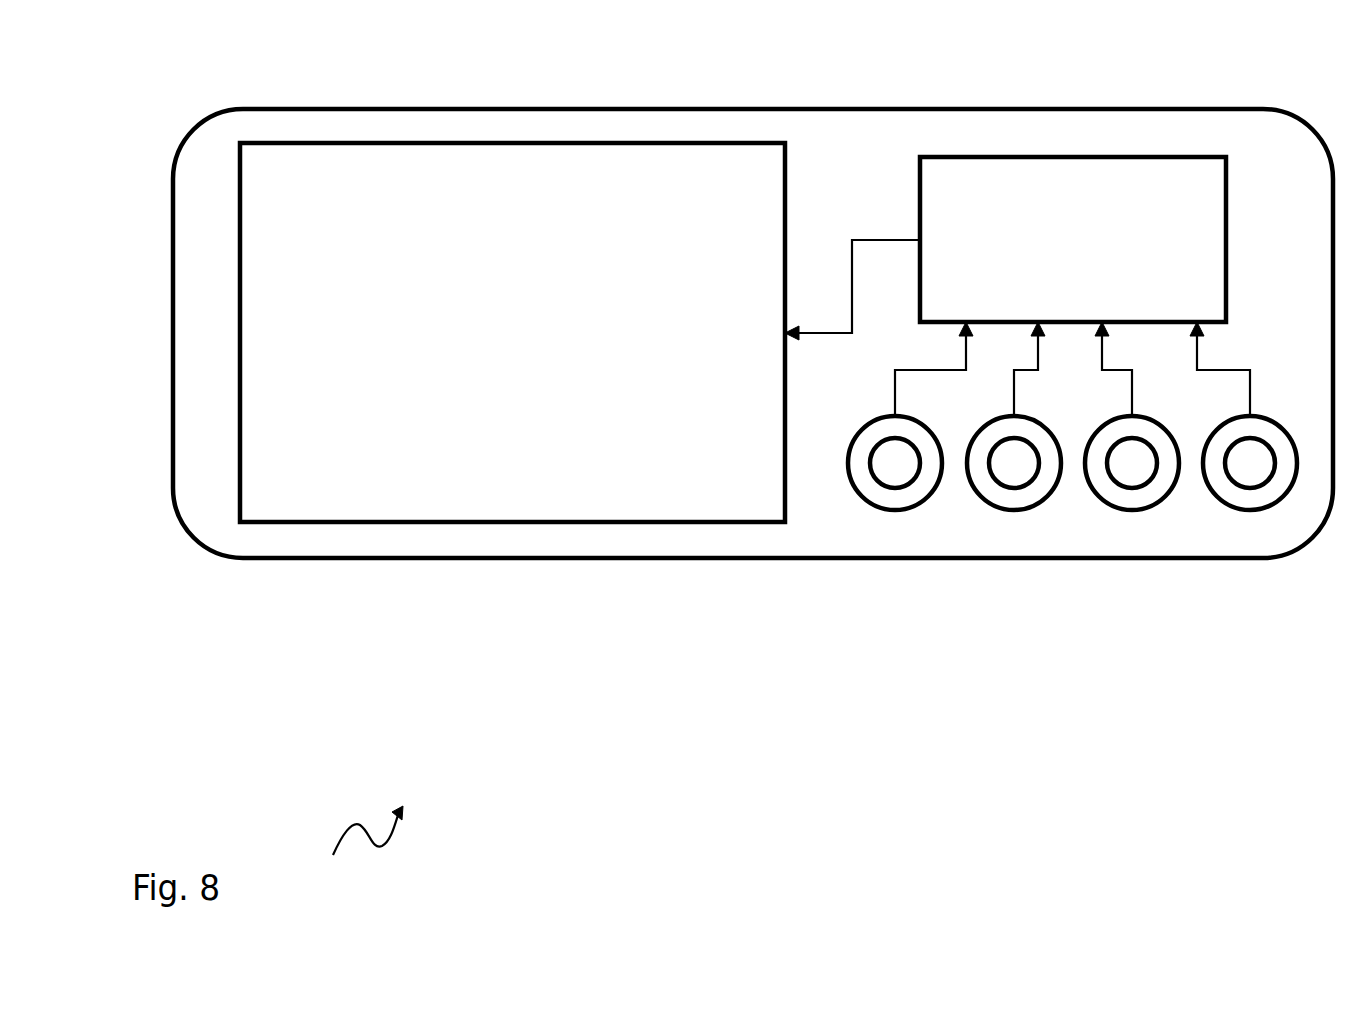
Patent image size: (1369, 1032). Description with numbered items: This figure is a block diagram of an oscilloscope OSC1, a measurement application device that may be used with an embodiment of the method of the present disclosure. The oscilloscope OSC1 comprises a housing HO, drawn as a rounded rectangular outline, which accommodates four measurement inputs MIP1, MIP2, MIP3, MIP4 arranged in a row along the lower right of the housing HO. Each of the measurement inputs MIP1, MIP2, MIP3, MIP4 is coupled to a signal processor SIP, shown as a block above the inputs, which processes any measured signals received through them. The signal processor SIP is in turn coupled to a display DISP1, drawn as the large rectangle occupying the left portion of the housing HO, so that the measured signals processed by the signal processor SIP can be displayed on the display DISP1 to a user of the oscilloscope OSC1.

The housing HO is at (255, 558).
The display DISP1 is at (330, 143).
The signal processor SIP is at (1028, 157).
The measurement input MIP1 is at (895, 510).
The measurement input MIP2 is at (1014, 510).
The measurement input MIP3 is at (1132, 510).
The measurement input MIP4 is at (1250, 510).
The oscilloscope OSC1 is at (350, 848).